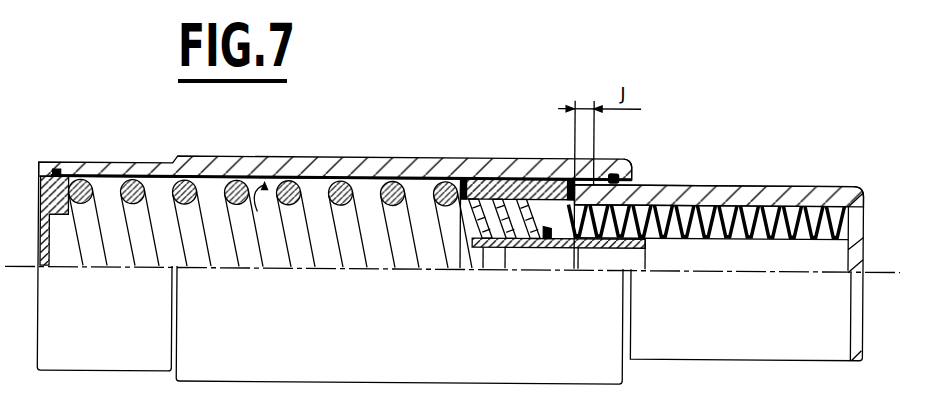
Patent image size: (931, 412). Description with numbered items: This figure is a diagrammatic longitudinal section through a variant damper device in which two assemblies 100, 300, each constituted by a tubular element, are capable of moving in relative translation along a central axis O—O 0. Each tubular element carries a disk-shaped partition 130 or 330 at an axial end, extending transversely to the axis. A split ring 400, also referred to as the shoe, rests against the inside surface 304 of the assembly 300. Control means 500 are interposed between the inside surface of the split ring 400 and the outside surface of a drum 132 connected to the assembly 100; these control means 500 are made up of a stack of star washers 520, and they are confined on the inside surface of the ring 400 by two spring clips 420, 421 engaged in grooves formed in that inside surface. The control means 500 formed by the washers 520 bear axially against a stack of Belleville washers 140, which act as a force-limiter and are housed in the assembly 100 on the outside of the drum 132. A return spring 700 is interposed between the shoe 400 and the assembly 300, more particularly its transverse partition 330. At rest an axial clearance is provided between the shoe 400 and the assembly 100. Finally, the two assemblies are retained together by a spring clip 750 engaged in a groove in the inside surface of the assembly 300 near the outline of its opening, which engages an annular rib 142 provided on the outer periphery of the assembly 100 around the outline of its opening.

The central axis 0 is at (20, 268).
The assembly 100 is at (783, 184).
The partition 130 is at (865, 207).
The drum 132 is at (578, 250).
The stack of Belleville washers 140 is at (702, 238).
The annular rib 142 is at (611, 173).
The assembly 300 is at (348, 158).
The inside surface 304 is at (229, 178).
The partition 330 is at (44, 207).
The split ring 400 is at (500, 180).
The spring clip 420 is at (465, 180).
The spring clip 421 is at (564, 178).
The control means 500 is at (468, 228).
The star washers 520 is at (505, 248).
The return spring 700 is at (143, 245).
The spring clip 750 is at (634, 168).